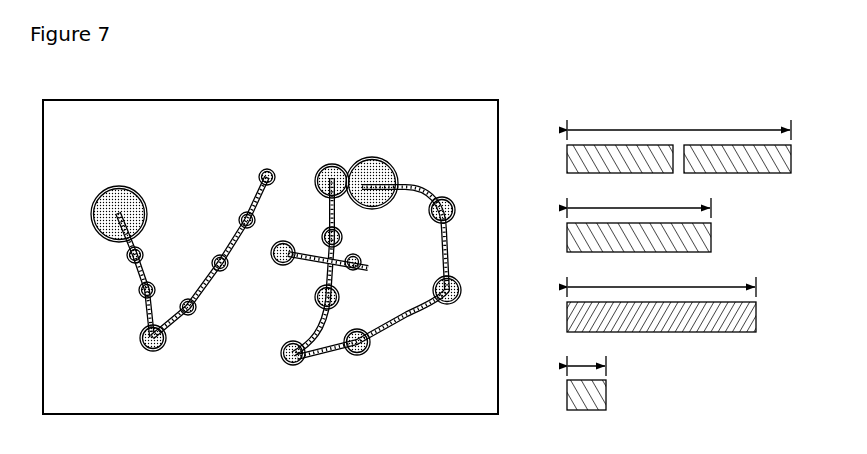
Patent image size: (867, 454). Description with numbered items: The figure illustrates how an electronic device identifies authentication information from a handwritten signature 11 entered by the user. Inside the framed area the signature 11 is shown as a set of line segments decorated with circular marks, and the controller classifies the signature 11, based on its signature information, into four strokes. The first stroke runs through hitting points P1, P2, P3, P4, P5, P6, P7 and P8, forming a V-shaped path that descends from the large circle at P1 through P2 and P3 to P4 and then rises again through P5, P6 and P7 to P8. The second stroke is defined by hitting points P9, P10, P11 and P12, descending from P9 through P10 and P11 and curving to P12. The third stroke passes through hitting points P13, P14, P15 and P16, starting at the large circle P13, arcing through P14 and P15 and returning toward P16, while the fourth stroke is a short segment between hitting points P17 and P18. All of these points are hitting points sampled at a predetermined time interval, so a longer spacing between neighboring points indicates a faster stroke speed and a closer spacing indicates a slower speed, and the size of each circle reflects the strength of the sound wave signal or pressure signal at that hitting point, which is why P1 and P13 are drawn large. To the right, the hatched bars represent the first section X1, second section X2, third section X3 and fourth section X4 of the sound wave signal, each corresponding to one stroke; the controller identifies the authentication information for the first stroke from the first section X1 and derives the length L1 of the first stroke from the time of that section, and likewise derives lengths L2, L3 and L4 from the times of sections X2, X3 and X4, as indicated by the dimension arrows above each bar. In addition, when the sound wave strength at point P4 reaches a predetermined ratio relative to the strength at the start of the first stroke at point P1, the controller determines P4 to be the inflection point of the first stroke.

The signature 11 is at (420, 316).
The hitting point P1 is at (134, 191).
The hitting point P2 is at (143, 255).
The hitting point P3 is at (139, 290).
The hitting point P4 is at (164, 346).
The hitting point P5 is at (195, 312).
The hitting point P6 is at (227, 267).
The hitting point P7 is at (240, 215).
The hitting point P8 is at (259, 175).
The hitting point P9 is at (334, 164).
The hitting point P10 is at (342, 237).
The hitting point P11 is at (339, 297).
The hitting point P12 is at (282, 356).
The hitting point P13 is at (383, 158).
The hitting point P14 is at (446, 198).
The hitting point P15 is at (456, 277).
The hitting point P16 is at (368, 348).
The hitting point P17 is at (284, 241).
The hitting point P18 is at (361, 262).
The first section X1 is at (660, 159).
The second section X2 is at (620, 237).
The third section X3 is at (643, 317).
The fourth section X4 is at (568, 395).
The length of the first stroke L1 is at (679, 125).
The length of the second stroke L2 is at (639, 202).
The length of the third stroke L3 is at (661, 281).
The length of the fourth stroke L4 is at (586, 360).